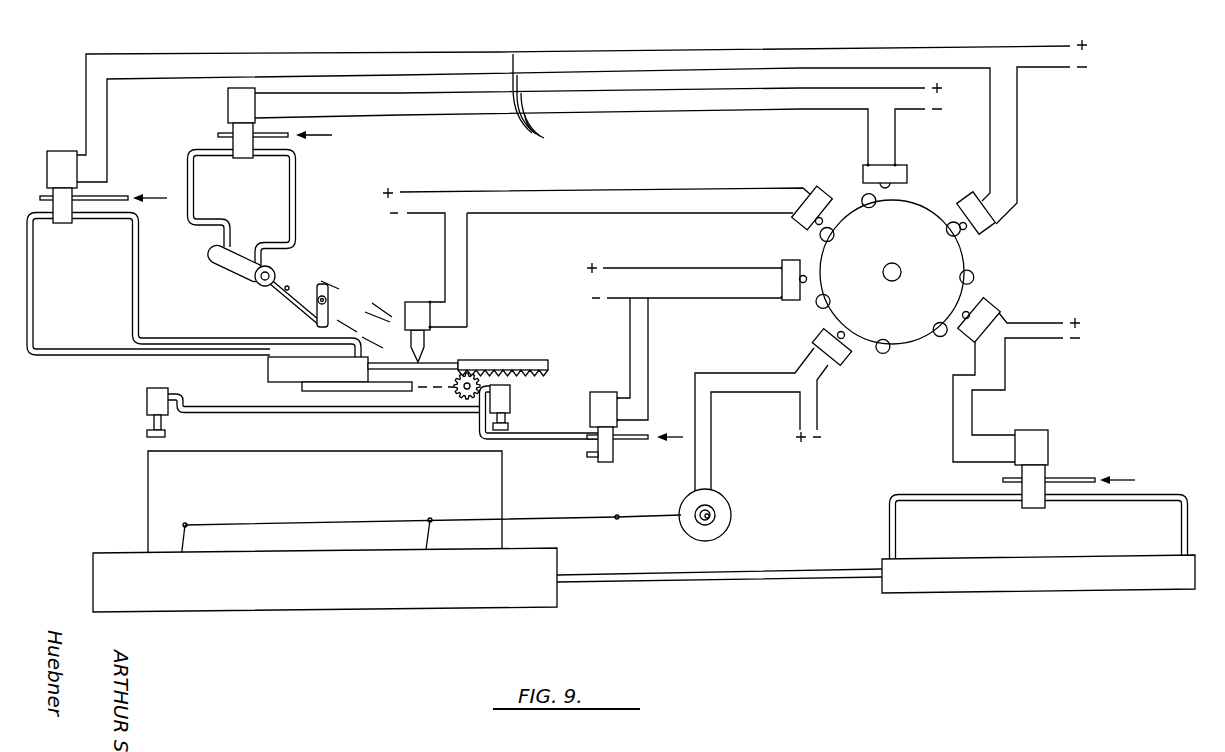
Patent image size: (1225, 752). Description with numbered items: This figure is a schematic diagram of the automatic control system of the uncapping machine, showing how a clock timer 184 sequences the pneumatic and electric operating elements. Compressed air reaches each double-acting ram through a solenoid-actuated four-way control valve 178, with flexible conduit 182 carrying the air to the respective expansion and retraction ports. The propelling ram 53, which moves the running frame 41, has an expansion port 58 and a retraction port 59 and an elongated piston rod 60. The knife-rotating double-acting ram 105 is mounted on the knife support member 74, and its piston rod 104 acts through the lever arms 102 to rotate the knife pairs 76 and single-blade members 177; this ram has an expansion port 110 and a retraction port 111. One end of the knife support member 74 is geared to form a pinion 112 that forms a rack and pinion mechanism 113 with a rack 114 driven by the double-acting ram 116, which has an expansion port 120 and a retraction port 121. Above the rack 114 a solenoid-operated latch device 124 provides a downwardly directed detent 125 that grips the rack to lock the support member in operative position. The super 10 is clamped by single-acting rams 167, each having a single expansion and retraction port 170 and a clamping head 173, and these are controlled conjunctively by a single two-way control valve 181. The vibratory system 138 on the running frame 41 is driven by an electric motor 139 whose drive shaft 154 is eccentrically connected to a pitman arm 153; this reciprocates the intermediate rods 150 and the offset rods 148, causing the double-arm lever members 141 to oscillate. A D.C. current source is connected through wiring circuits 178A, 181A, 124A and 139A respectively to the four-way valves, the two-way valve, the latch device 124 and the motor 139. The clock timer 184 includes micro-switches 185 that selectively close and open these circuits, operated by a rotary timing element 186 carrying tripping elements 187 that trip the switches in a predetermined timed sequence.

The super 10 is at (142, 488).
The running frame 41 is at (190, 606).
The ram 53 is at (920, 594).
The expansion port 58 is at (1182, 556).
The retraction port 59 is at (895, 557).
The piston rod 60 is at (665, 584).
The knife support member 74 is at (347, 292).
The knife pairs 76 is at (375, 404).
The lever arms 102 is at (330, 308).
The piston rod 104 is at (278, 283).
The double-acting ram 105 is at (234, 276).
The expansion port 110 is at (229, 243).
The retraction port 111 is at (254, 260).
The pinion 112 is at (467, 400).
The rack and pinion mechanism 113 is at (470, 362).
The rack 114 is at (532, 360).
The double-acting ram 116 is at (268, 372).
The expansion port 120 is at (274, 355).
The retraction port 121 is at (325, 347).
The latch device 124 is at (422, 302).
The wiring circuit 124A is at (588, 192).
The detent 125 is at (417, 360).
The vibratory system 138 is at (370, 510).
The electric motor 139 is at (720, 494).
The wiring circuit 139A is at (768, 392).
The double-arm lever members 141 is at (184, 563).
The reciprocative rods 148 is at (258, 523).
The intermediate rods 150 is at (523, 519).
The pitman arm 153 is at (648, 519).
The motor drive shaft 154 is at (712, 522).
The single-acting rams 167 is at (147, 402).
The expansion and retraction port 170 is at (163, 388).
The clamping head 173 is at (148, 431).
The single-blade members 177 is at (213, 563).
The four-way control valve 178 is at (47, 180).
The wiring circuit 178A is at (1020, 406).
The two-way control valve 181 is at (600, 392).
The wiring circuit 181A is at (705, 268).
The flexible conduit 182 is at (294, 194).
The clock timer 184 is at (975, 253).
The micro-switches 185 is at (848, 158).
The rotary timing element 186 is at (912, 248).
The tripping elements 187 is at (975, 279).